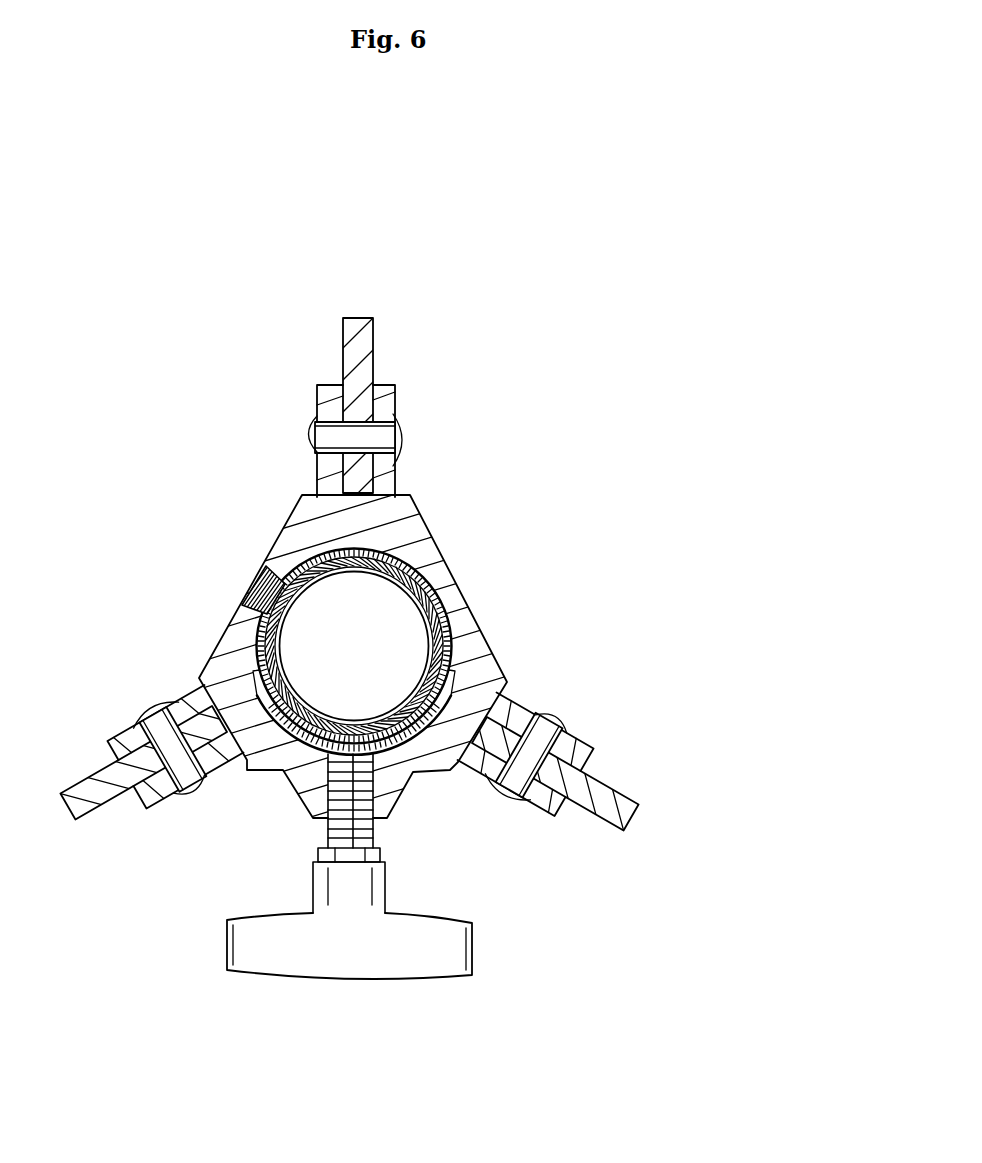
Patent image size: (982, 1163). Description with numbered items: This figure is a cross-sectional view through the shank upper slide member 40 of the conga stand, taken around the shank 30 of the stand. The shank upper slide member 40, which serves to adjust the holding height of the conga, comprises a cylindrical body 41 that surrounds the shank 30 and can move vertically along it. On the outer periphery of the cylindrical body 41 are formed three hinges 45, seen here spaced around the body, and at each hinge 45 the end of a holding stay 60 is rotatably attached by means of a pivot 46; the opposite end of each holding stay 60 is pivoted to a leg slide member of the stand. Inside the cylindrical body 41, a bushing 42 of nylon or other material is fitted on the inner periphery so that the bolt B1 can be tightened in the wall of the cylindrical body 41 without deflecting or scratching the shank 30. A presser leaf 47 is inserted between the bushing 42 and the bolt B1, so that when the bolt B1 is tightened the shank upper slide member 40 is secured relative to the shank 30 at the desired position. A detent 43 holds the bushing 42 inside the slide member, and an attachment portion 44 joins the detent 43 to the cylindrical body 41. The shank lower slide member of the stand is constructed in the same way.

The shank 30 is at (393, 583).
The shank upper slide member 40 is at (448, 570).
The cylindrical body 41 is at (463, 637).
The bushing 42 is at (462, 638).
The detent 43 is at (248, 590).
The attachment portion 44 is at (258, 580).
The hinge 45 is at (322, 395).
The pivot 46 is at (404, 432).
The presser leaf 47 is at (411, 742).
The holding stay 60 is at (511, 345).
The bolt B1 is at (350, 943).